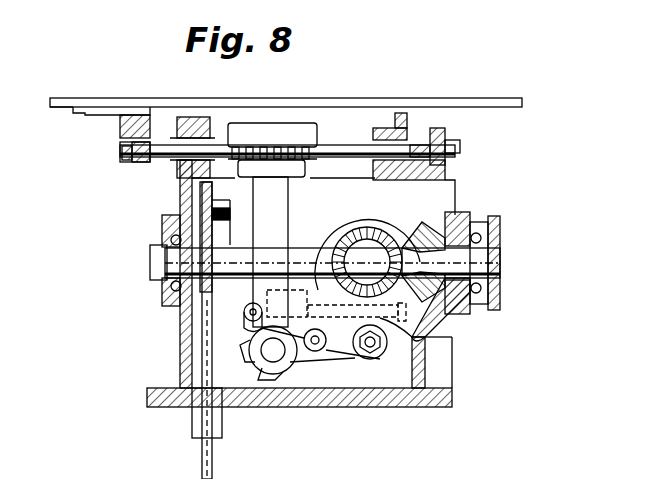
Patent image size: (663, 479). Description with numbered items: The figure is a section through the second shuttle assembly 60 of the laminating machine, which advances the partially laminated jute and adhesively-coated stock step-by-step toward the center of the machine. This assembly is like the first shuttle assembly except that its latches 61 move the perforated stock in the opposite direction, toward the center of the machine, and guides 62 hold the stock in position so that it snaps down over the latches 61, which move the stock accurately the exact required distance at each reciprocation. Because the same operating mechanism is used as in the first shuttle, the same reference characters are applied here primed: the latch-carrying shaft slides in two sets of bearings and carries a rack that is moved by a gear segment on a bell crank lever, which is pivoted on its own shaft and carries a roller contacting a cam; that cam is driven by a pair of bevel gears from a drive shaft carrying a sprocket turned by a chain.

The second shuttle assembly 60 is at (372, 98).
The latches 61 is at (82, 100).
The guides 62 is at (60, 100).